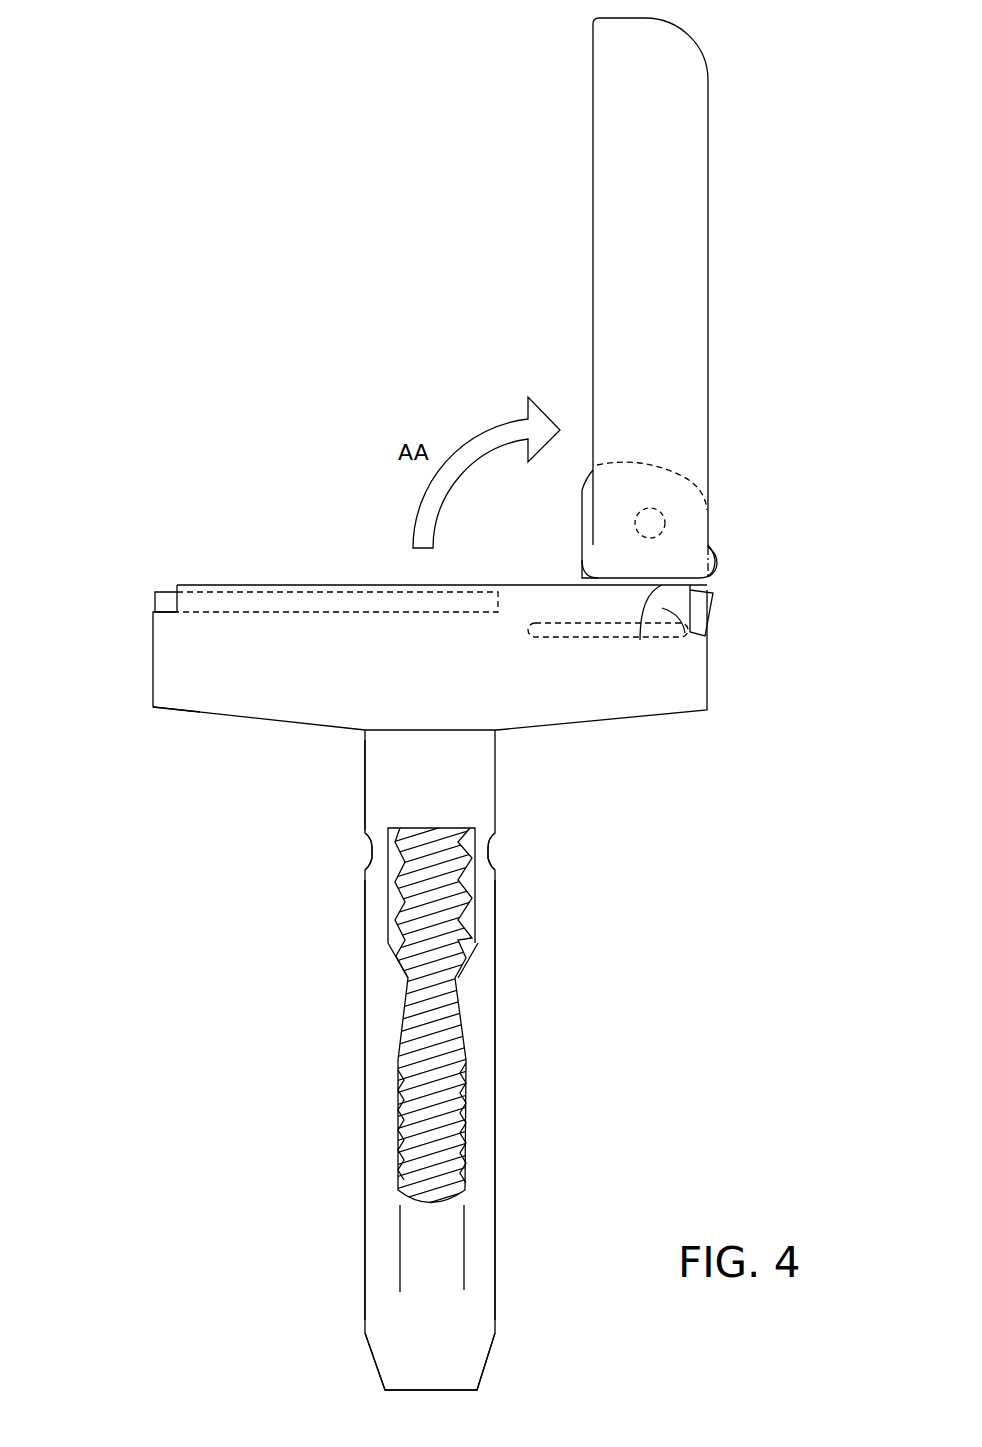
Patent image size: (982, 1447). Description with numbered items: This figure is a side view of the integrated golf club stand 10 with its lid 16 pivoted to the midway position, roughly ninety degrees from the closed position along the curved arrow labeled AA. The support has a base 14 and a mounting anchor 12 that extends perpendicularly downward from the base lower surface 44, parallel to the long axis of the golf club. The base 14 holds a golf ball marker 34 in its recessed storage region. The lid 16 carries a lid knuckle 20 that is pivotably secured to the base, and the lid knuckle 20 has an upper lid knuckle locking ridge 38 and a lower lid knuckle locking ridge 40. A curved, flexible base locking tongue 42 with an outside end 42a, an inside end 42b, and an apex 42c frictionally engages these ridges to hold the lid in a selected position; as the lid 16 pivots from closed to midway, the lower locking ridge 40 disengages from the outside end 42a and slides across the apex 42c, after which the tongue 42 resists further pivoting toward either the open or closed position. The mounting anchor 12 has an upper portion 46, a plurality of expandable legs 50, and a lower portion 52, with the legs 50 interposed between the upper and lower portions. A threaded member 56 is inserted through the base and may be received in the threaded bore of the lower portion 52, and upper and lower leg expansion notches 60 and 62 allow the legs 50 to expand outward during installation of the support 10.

The integrated golf club stand 10 is at (236, 286).
The mounting anchor 12 is at (236, 993).
The base 14 is at (153, 668).
The lid 16 is at (593, 133).
The lid knuckle 20 is at (708, 477).
The golf ball marker 34 is at (155, 600).
The upper lid knuckle locking ridge 38 is at (717, 565).
The lower lid knuckle locking ridge 40 is at (582, 572).
The base locking tongue 42 is at (685, 620).
The base locking tongue outside end 42a is at (715, 612).
The base locking tongue inside end 42b is at (575, 600).
The base locking tongue apex 42c is at (642, 620).
The base lower surface 44 is at (167, 713).
The mounting anchor upper portion 46 is at (356, 765).
The expandable legs 50 is at (356, 1083).
The mounting anchor lower portion 52 is at (356, 1319).
The threaded member 56 is at (436, 1137).
The upper leg expansion notch 60 is at (368, 862).
The lower leg expansion notch 62 is at (383, 943).